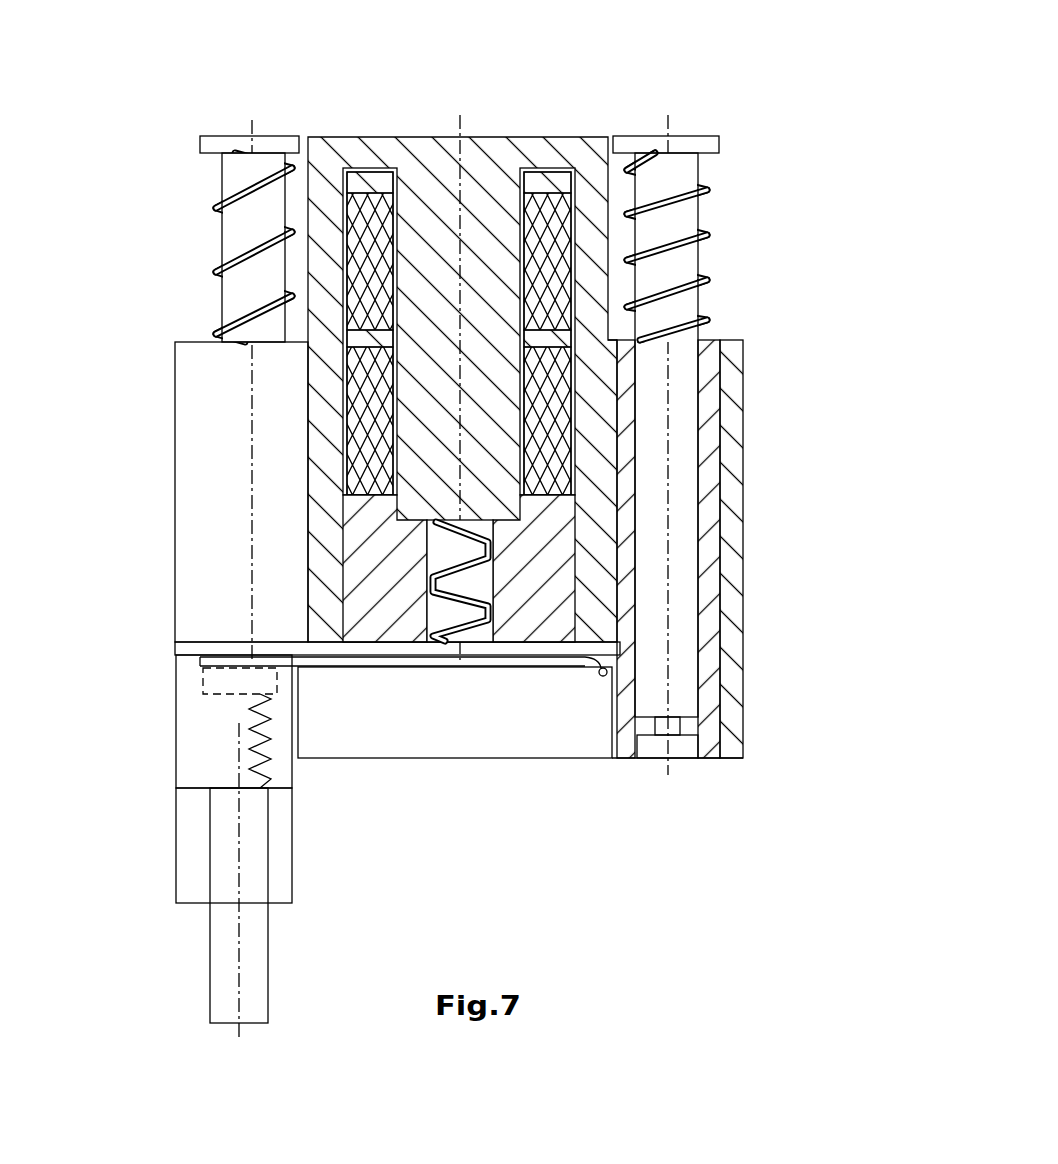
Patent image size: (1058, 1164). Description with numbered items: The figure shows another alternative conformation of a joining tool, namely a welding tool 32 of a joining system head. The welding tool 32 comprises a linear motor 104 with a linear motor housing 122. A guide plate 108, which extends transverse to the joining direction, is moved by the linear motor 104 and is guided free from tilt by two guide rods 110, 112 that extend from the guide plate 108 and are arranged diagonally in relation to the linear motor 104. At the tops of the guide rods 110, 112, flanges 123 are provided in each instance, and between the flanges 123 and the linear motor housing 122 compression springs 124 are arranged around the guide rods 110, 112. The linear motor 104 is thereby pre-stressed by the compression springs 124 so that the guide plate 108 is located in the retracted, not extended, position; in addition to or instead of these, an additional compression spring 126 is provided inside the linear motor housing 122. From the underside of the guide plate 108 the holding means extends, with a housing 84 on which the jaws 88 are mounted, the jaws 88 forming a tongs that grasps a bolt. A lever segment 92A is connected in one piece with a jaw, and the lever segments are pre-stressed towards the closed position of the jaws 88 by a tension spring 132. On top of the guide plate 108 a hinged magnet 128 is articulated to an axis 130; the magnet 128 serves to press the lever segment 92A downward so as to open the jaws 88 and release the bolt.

The welding tool 32 is at (822, 167).
The linear motor 104 is at (337, 106).
The flanges 123 is at (213, 143).
The compression springs 124 is at (212, 207).
The guide rod 110 is at (240, 295).
The guide rod 112 is at (700, 306).
The linear motor housing 122 is at (198, 402).
The lever segment 92A is at (233, 680).
The housing 84 is at (205, 745).
The jaws 88 is at (228, 850).
The tension spring 132 is at (262, 718).
The additional compression spring 126 is at (422, 598).
The guide plate 108 is at (445, 707).
The hinged magnet 128 is at (487, 662).
The axis 130 is at (601, 676).